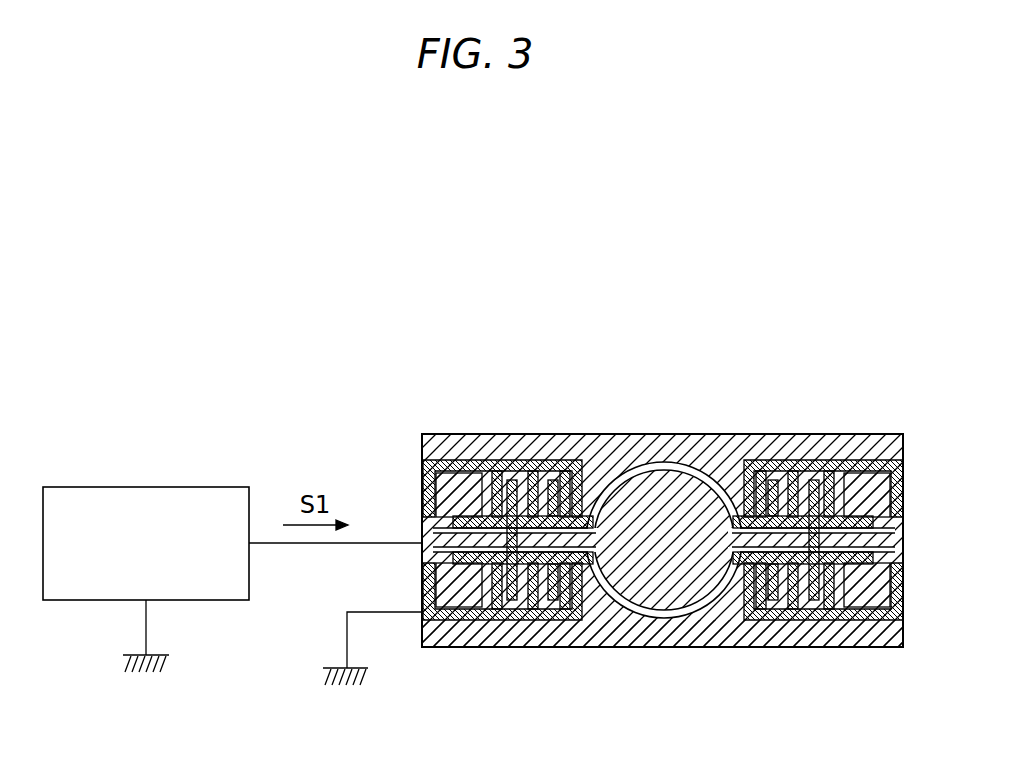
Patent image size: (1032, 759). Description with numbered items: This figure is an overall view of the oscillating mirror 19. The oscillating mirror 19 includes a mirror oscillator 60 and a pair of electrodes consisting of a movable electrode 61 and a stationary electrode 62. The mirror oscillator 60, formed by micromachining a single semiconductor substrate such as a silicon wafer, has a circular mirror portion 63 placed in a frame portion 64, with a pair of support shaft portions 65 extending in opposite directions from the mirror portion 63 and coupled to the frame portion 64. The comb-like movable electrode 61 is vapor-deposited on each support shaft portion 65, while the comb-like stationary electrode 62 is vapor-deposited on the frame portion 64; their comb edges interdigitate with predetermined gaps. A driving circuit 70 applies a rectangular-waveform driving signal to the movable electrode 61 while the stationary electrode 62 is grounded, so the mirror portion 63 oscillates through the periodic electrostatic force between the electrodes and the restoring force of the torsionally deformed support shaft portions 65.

The oscillating mirror 19 is at (662, 519).
The mirror oscillator 60 is at (656, 626).
The movable electrode 61 is at (510, 587).
The stationary electrode 62 is at (453, 455).
The mirror portion 63 is at (627, 497).
The frame portion 64 is at (758, 633).
The support shaft portion 65 is at (543, 528).
The driving circuit 70 is at (154, 493).